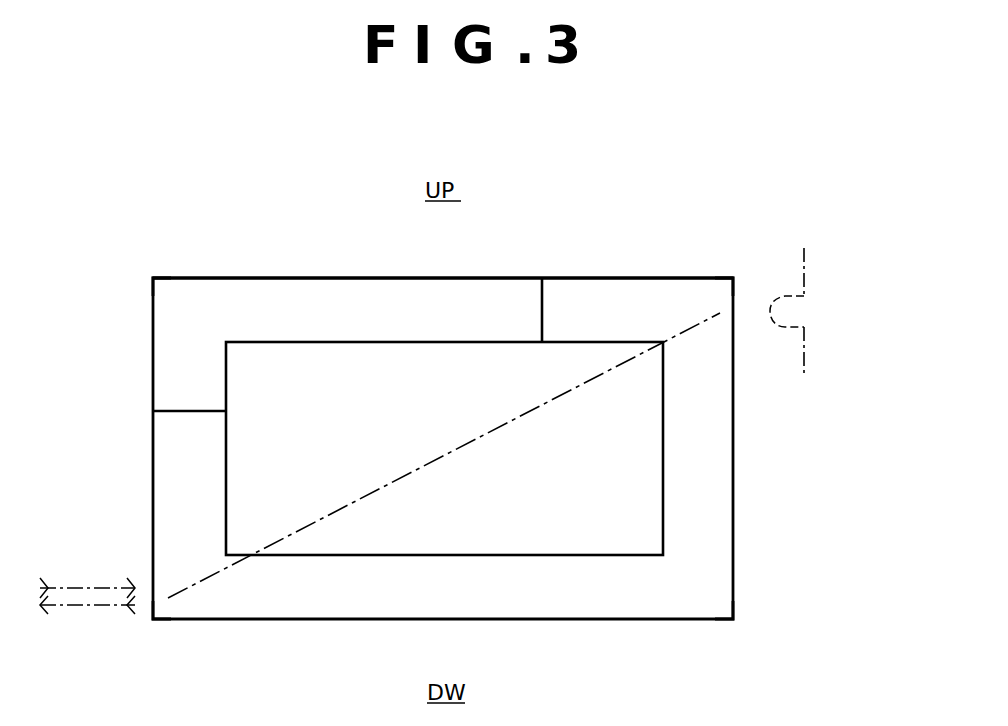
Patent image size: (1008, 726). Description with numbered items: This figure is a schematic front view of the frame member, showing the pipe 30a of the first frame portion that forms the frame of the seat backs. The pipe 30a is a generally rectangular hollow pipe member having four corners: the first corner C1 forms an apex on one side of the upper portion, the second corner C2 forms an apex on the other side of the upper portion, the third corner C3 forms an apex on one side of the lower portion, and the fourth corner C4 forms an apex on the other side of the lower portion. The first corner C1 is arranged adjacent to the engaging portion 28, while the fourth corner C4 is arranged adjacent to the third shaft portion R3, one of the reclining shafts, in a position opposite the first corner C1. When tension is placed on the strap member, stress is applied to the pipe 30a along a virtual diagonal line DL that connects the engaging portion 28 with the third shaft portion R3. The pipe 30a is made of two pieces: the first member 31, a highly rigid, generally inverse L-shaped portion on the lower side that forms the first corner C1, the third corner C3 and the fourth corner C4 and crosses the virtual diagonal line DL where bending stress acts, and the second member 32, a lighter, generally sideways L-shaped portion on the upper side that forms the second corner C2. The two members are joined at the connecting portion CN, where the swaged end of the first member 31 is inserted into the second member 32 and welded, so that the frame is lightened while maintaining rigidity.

The engaging portion 28 is at (788, 297).
The pipe 30a is at (420, 268).
The first member 31 is at (663, 607).
The second member 32 is at (273, 298).
The first corner C1 is at (729, 277).
The second corner C2 is at (156, 286).
The third corner C3 is at (735, 619).
The fourth corner C4 is at (153, 620).
The connecting portion CN is at (183, 410).
The virtual diagonal line DL is at (690, 328).
The third shaft portion R3 is at (90, 587).